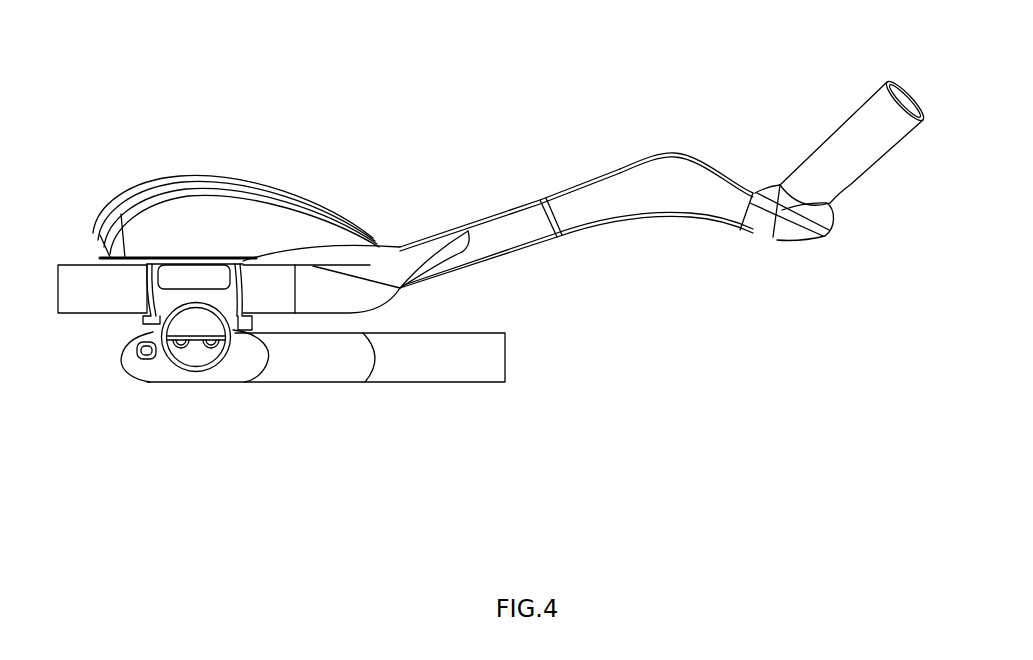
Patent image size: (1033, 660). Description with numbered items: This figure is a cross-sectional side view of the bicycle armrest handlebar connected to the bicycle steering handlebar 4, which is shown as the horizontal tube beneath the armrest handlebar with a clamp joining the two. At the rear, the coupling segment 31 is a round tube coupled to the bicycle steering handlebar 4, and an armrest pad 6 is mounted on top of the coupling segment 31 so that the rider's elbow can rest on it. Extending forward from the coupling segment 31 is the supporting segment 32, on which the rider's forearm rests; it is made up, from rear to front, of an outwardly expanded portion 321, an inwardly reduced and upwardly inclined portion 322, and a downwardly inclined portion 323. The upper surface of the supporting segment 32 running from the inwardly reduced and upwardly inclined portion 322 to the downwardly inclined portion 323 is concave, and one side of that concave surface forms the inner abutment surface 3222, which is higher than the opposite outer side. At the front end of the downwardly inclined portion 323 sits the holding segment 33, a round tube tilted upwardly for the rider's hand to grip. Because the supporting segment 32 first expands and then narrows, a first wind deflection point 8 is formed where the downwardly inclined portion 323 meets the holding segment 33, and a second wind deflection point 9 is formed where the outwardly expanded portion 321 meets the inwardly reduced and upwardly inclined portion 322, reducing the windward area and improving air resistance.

The bicycle steering handlebar 4 is at (313, 367).
The armrest pad 6 is at (207, 187).
The first wind deflection point 8 is at (829, 234).
The second wind deflection point 9 is at (402, 290).
The coupling segment 31 is at (84, 296).
The supporting segment 32 is at (511, 271).
The holding segment 33 is at (848, 163).
The outwardly expanded portion 321 is at (368, 295).
The inwardly reduced and upwardly inclined portion 322 is at (589, 213).
The downwardly inclined portion 323 is at (763, 222).
The inner abutment surface 3222 is at (683, 152).